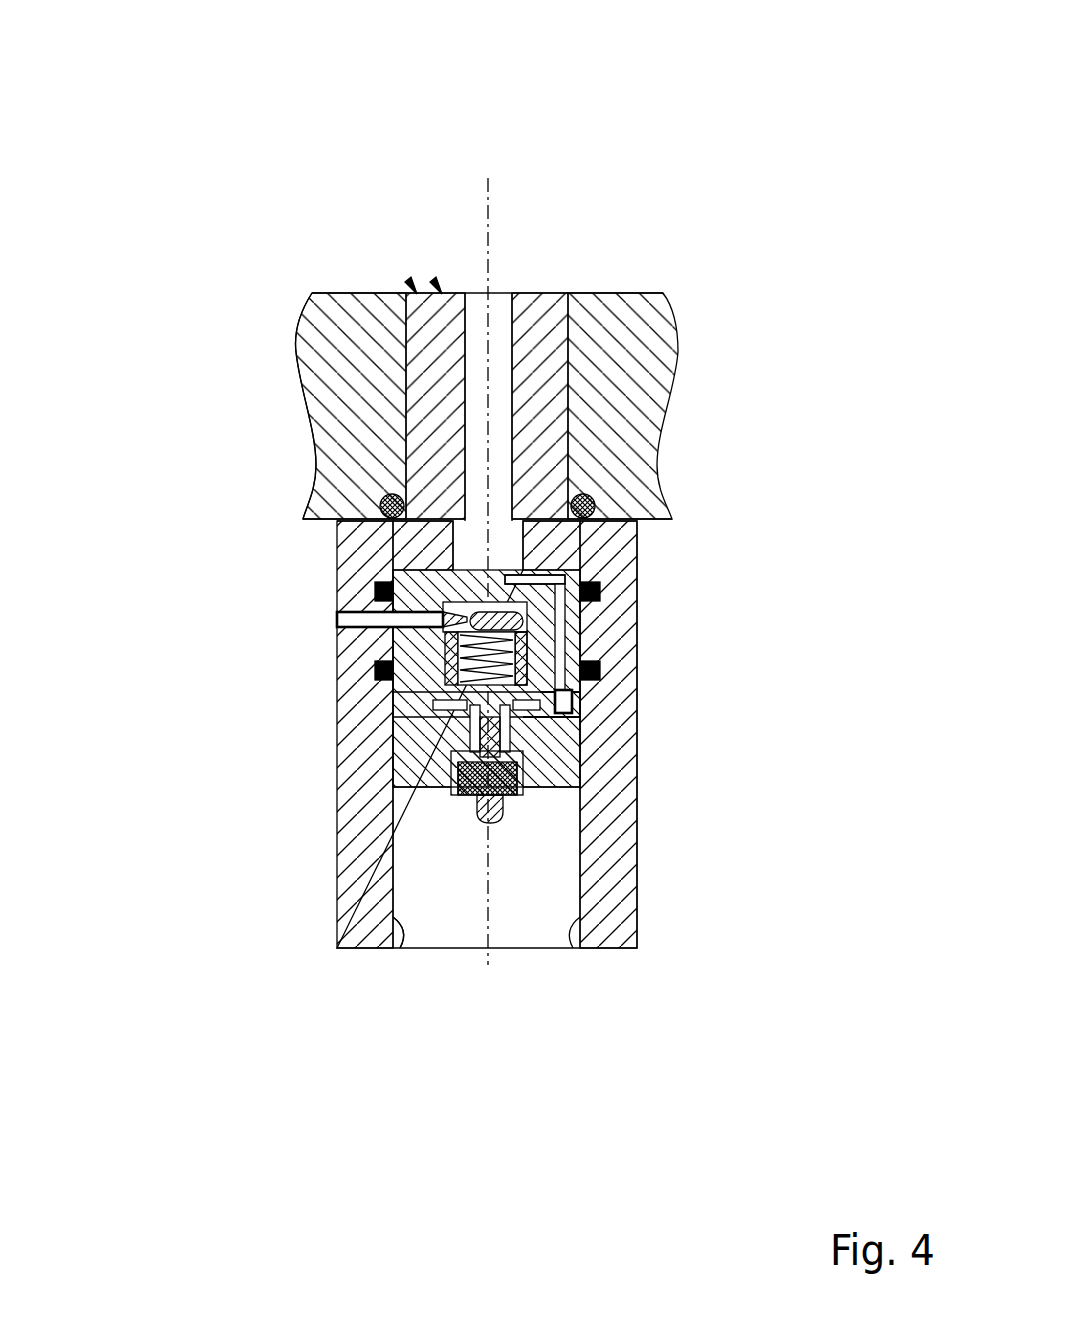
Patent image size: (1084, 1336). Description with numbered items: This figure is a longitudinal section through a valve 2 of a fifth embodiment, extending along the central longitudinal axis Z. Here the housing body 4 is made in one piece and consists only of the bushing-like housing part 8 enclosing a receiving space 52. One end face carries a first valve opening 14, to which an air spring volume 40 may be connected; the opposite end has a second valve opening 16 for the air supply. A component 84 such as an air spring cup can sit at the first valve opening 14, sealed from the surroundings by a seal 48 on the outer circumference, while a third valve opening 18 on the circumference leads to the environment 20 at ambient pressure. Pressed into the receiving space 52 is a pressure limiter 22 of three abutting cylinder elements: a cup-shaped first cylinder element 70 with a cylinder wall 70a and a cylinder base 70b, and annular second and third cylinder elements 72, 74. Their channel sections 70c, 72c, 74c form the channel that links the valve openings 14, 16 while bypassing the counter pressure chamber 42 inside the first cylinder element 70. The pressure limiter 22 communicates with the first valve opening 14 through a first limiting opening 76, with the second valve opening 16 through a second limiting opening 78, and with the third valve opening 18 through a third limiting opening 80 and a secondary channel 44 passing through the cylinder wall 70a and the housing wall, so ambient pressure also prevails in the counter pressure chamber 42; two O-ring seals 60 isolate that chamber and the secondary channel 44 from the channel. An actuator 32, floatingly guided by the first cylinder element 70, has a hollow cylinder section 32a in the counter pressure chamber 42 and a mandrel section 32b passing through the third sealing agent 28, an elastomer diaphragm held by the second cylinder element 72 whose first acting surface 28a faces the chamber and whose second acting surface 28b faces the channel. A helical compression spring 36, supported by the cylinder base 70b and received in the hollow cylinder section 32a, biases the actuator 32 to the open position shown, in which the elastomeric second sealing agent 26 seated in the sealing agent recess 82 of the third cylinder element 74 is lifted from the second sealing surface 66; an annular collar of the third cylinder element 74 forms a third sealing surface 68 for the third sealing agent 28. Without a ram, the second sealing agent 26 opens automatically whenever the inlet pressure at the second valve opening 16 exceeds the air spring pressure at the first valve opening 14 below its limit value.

The valve 2 is at (412, 288).
The housing body 4 is at (436, 288).
The housing part 8 is at (340, 515).
The first valve opening 14 is at (610, 295).
The second valve opening 16 is at (573, 948).
The third valve opening 18 is at (337, 620).
The environment 20 is at (471, 668).
The pressure limiter 22 is at (520, 793).
The second sealing agent 26 is at (513, 795).
The third sealing agent 28 is at (398, 690).
The first acting surface 28a is at (430, 703).
The second acting surface 28b is at (397, 780).
The actuator 32 is at (600, 625).
The hollow cylinder section 32a is at (521, 658).
The mandrel section 32b is at (560, 768).
The spring 36 is at (605, 590).
The air spring volume 40 is at (490, 268).
The counter pressure chamber 42 is at (292, 305).
The secondary channel 44 is at (348, 500).
The seal 48 is at (437, 537).
The receiving space 52 is at (400, 948).
The seals 60 is at (393, 572).
The second sealing surface 66 is at (393, 917).
The third sealing surface 68 is at (585, 750).
The first cylinder element 70 is at (610, 585).
The cylinder wall 70a is at (535, 579).
The cylinder base 70b is at (390, 618).
The channel section 70c is at (590, 585).
The second cylinder element 72 is at (585, 700).
The channel section 72c is at (575, 705).
The third cylinder element 74 is at (590, 745).
The channel section 74c is at (575, 732).
The first limiting opening 76 is at (585, 493).
The second limiting opening 78 is at (457, 787).
The third limiting opening 80 is at (395, 633).
The sealing agent recess 82 is at (464, 795).
The component 84 is at (392, 493).
The central longitudinal axis Z is at (490, 207).